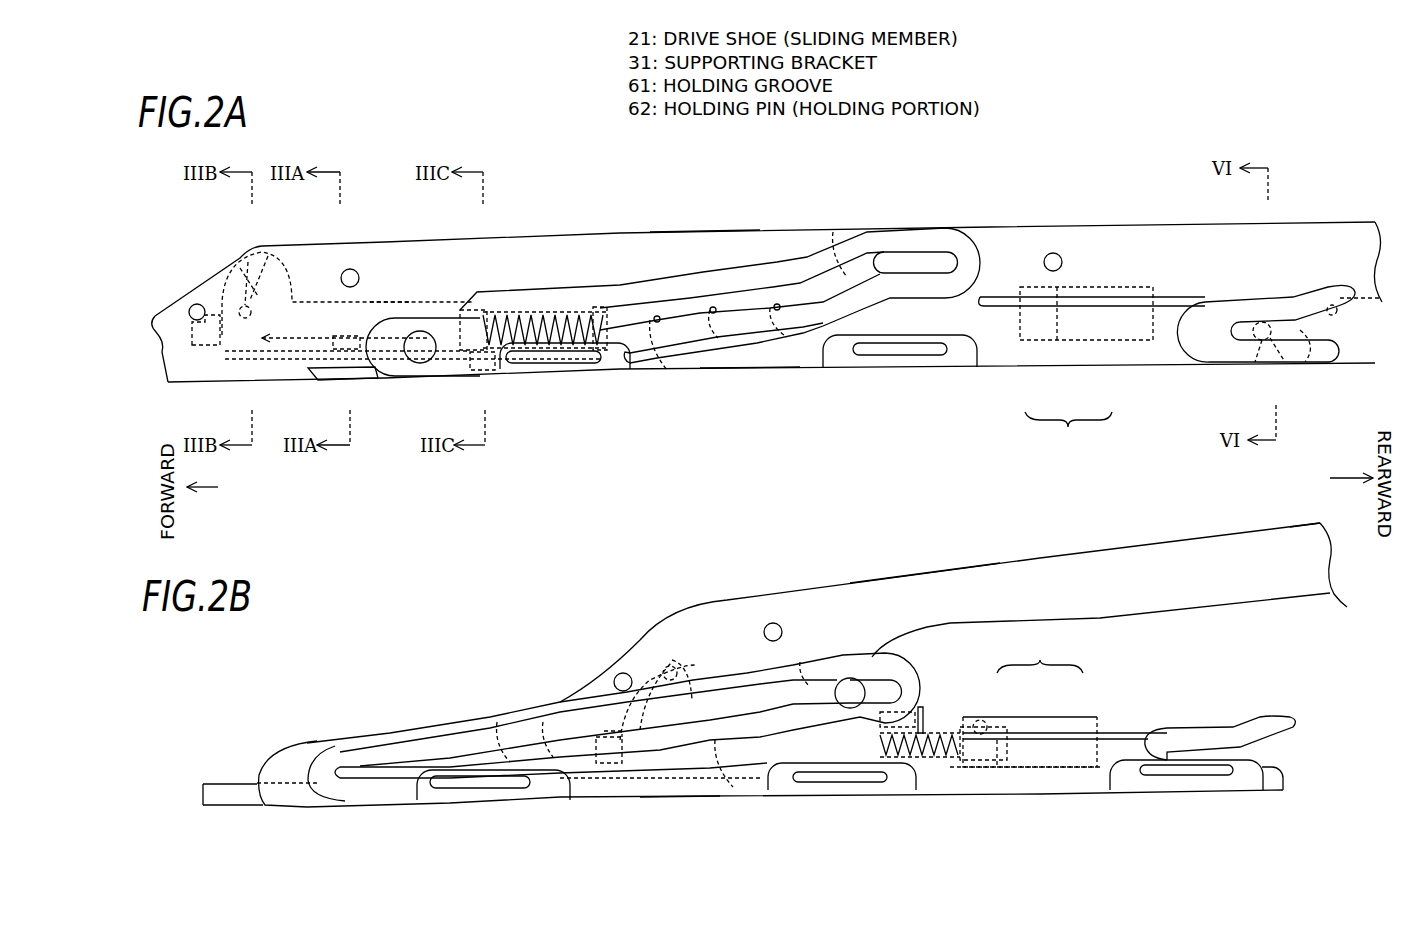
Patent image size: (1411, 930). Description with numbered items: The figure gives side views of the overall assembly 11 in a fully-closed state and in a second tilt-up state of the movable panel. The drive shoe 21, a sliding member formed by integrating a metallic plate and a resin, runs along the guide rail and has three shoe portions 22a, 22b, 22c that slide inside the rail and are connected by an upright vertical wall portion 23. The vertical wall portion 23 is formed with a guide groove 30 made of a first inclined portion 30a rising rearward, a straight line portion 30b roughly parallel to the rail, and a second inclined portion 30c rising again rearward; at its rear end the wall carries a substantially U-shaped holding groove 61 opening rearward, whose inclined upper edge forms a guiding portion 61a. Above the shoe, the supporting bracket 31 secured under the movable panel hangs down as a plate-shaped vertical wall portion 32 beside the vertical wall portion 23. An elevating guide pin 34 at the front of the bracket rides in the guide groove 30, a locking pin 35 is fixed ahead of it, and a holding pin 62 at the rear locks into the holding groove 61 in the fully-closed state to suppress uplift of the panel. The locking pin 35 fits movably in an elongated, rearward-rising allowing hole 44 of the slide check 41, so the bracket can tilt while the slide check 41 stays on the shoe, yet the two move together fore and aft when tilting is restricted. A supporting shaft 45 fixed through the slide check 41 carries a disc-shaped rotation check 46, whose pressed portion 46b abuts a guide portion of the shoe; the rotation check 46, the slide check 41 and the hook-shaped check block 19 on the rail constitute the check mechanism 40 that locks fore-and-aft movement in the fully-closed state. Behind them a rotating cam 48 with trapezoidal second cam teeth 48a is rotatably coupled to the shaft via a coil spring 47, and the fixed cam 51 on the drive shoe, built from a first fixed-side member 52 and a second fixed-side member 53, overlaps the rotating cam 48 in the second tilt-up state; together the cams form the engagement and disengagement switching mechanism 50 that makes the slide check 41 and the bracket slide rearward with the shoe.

In FIG. 2A, the sunroof apparatus / guide rail assembly 11 is at (1130, 200).
In FIG. 2B, the sunroof apparatus / guide rail assembly 11 is at (1187, 522).
In FIG. 2A, the check block 19 is at (287, 380).
In FIG. 2A, the drive shoe 21 is at (986, 368).
In FIG. 2B, the drive shoe 21 is at (1065, 797).
In FIG. 2A, the shoe portion 22a is at (585, 372).
In FIG. 2B, the shoe portion 22a is at (495, 805).
In FIG. 2A, the shoe portion 22b is at (905, 370).
In FIG. 2B, the shoe portion 22b is at (846, 800).
In FIG. 2B, the shoe portion 22c is at (1190, 795).
In FIG. 2A, the vertical wall portion 23 is at (750, 372).
In FIG. 2B, the vertical wall portion 23 is at (677, 805).
In FIG. 2A, the guide groove 30 is at (712, 338).
In FIG. 2B, the guide groove 30 is at (547, 722).
In FIG. 2A, the first inclined portion 30a is at (660, 365).
In FIG. 2B, the first inclined portion 30a is at (497, 720).
In FIG. 2A, the straight line portion 30b is at (778, 335).
In FIG. 2B, the straight line portion 30b is at (733, 790).
In FIG. 2A, the second inclined portion 30c is at (845, 265).
In FIG. 2B, the second inclined portion 30c is at (806, 685).
In FIG. 2A, the supporting bracket 31 is at (1022, 232).
In FIG. 2B, the supporting bracket 31 is at (1040, 560).
In FIG. 2A, the vertical wall portion 32 is at (703, 232).
In FIG. 2B, the vertical wall portion 32 is at (922, 578).
In FIG. 2A, the elevating guide pin 34 is at (418, 365).
In FIG. 2B, the elevating guide pin 34 is at (855, 678).
In FIG. 2A, the locking pin 35 is at (252, 313).
In FIG. 2B, the locking pin 35 is at (678, 672).
In FIG. 2A, the check mechanism 40 is at (316, 266).
In FIG. 2A, the slide check 41 is at (388, 300).
In FIG. 2B, the slide check 41 is at (694, 641).
In FIG. 2A, the allowing hole 44 is at (238, 264).
In FIG. 2B, the allowing hole 44 is at (615, 672).
In FIG. 2A, the supporting shaft 45 is at (199, 344).
In FIG. 2B, the supporting shaft 45 is at (600, 797).
In FIG. 2A, the rotation check 46 is at (470, 308).
In FIG. 2B, the rotation check 46 is at (912, 718).
In FIG. 2A, the pressed portion 46b is at (483, 372).
In FIG. 2A, the coil spring 47 is at (545, 352).
In FIG. 2B, the coil spring 47 is at (937, 790).
In FIG. 2A, the rotating cam 48 is at (600, 305).
In FIG. 2B, the rotating cam 48 is at (988, 790).
In FIG. 2B, the second cam teeth 48a is at (978, 720).
In FIG. 2B, the engagement and disengagement switching mechanism 50 is at (1105, 695).
In FIG. 2A, the fixed cam 51 is at (1077, 451).
In FIG. 2B, the fixed cam 51 is at (1054, 657).
In FIG. 2A, the first fixed-side member 52 is at (1085, 345).
In FIG. 2B, the first fixed-side member 52 is at (1062, 717).
In FIG. 2A, the second fixed-side member 53 is at (1043, 345).
In FIG. 2B, the second fixed-side member 53 is at (1005, 717).
In FIG. 2A, the holding groove 61 is at (1305, 355).
In FIG. 2B, the holding groove 61 is at (1220, 738).
In FIG. 2A, the guiding portion 61a is at (1330, 303).
In FIG. 2A, the holding pin 62 is at (1256, 345).